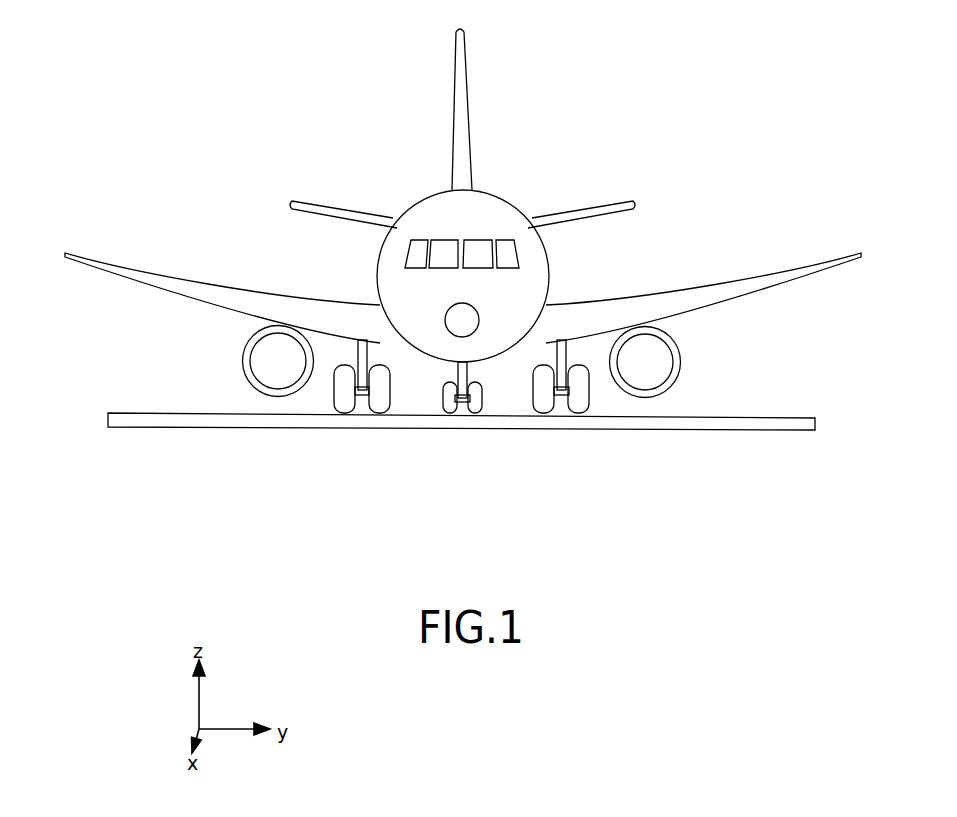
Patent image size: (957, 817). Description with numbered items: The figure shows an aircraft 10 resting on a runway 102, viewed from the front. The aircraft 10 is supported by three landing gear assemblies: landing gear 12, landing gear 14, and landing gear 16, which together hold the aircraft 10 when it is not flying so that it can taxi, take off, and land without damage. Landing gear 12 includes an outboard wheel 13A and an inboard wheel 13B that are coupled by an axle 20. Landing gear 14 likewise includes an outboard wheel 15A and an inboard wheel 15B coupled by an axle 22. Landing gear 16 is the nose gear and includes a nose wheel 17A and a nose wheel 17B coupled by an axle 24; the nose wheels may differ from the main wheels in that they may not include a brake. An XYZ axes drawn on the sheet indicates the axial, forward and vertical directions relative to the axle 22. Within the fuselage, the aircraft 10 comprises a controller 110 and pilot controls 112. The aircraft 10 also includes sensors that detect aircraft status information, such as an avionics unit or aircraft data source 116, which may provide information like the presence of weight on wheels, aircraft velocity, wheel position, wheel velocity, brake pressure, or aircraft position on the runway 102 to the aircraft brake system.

The aircraft 10 is at (306, 106).
The landing gear 12 is at (637, 371).
The outboard wheel 13A is at (592, 404).
The inboard wheel 13B is at (547, 364).
The landing gear 14 is at (283, 437).
The outboard wheel 15A is at (333, 404).
The inboard wheel 15B is at (390, 404).
The landing gear 16 is at (504, 390).
The nose wheel 17A is at (483, 404).
The nose wheel 17B is at (444, 404).
The axle 20 is at (562, 396).
The axle 22 is at (357, 394).
The axle 24 is at (462, 402).
The runway 102 is at (760, 417).
The controller 110 is at (523, 287).
The pilot controls 112 is at (420, 257).
The aircraft data source 116 is at (490, 217).